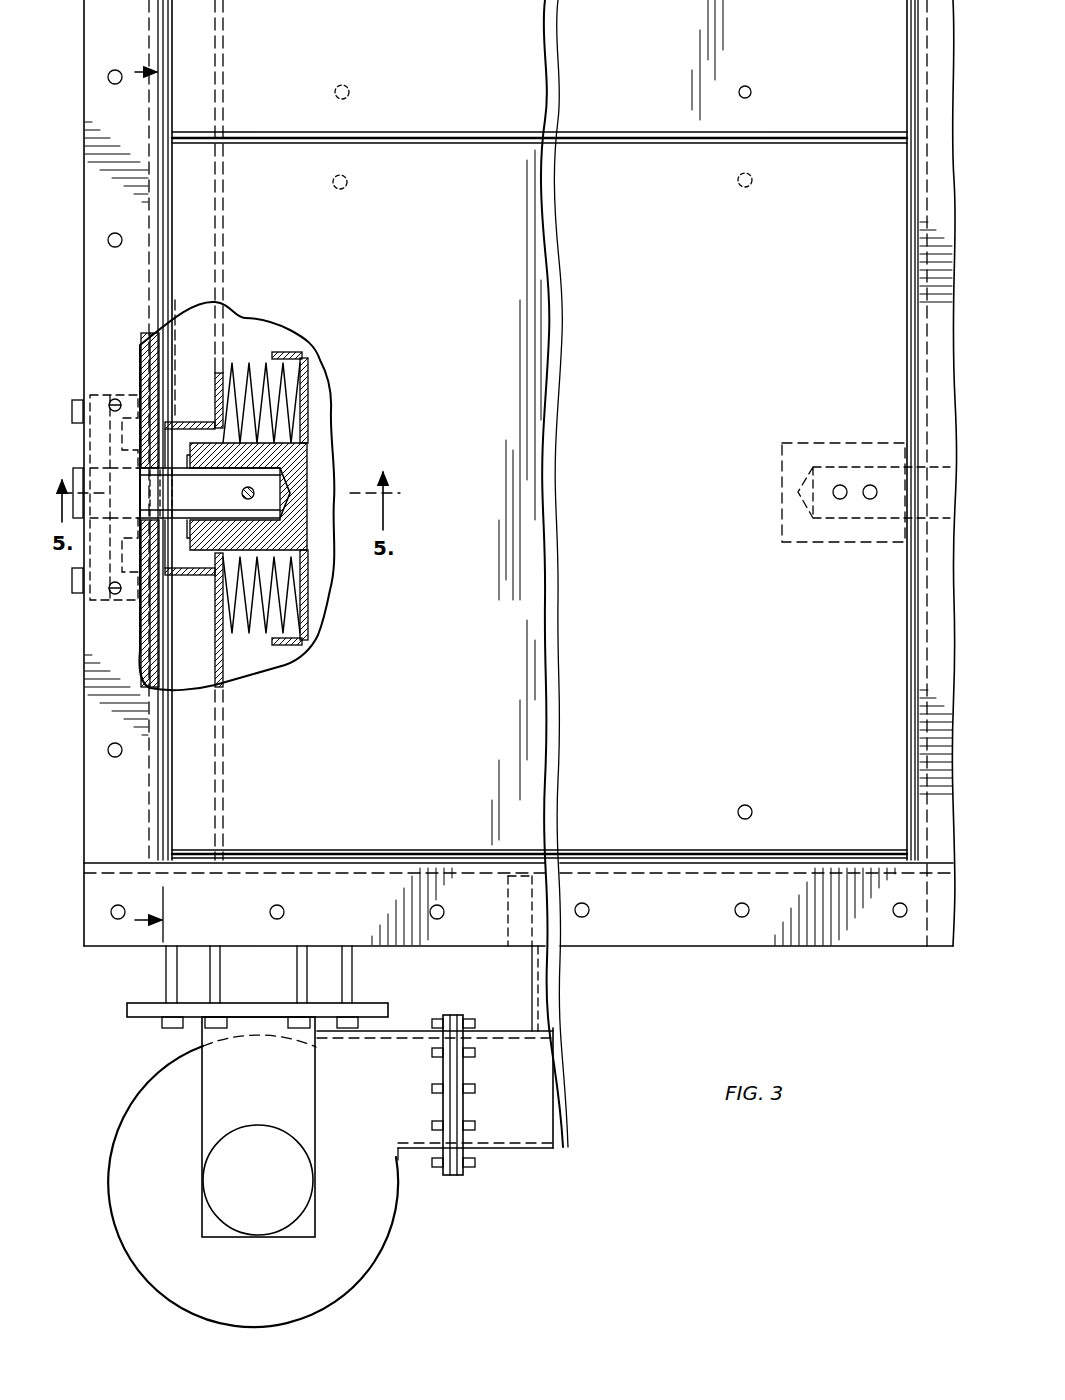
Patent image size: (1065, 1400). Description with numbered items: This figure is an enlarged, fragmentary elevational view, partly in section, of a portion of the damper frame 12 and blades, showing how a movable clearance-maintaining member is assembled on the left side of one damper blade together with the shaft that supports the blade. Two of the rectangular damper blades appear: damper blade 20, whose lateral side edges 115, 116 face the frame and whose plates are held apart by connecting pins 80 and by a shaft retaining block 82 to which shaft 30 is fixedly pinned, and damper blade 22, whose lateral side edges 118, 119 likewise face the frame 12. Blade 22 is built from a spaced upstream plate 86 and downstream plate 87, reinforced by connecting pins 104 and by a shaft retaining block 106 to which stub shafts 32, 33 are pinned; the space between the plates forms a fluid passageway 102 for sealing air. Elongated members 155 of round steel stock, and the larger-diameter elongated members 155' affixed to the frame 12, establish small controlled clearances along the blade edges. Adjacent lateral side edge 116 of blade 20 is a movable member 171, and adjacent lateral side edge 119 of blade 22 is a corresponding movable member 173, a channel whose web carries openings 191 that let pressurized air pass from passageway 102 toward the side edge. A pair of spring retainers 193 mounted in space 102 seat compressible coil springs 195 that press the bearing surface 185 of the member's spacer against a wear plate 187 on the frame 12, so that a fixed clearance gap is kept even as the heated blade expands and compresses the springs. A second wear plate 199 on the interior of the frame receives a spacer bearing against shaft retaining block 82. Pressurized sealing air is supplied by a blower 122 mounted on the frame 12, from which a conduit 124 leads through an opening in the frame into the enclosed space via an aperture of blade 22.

The frame 12 is at (470, 952).
The damper blade 20 is at (544, 13).
The damper blade 22 is at (585, 476).
The shaft 30 is at (850, 466).
The stub shaft 32 is at (846, 520).
The stub shaft 33 is at (80, 470).
The connecting pins 80 is at (341, 84).
The shaft retaining block 82 is at (796, 445).
The upstream plate 86 is at (324, 396).
The downstream plate 87 is at (367, 718).
The fluid passageway 102 is at (315, 625).
The connecting pins 104 is at (347, 180).
The shaft retaining block 106 is at (300, 462).
The lateral side edge 115 is at (905, 18).
The lateral side edge 116 is at (168, 84).
The lateral side edge 118 is at (910, 296).
The lateral side edge 119 is at (172, 240).
The blower 122 is at (375, 1238).
The conduit 124 is at (548, 1020).
The elongated members 155 is at (539, 116).
The elongated members 155' is at (539, 836).
The movable member 171 is at (220, 40).
The movable member 173 is at (199, 360).
The bearing surface 185 is at (186, 420).
The wear plate 187 is at (160, 192).
The openings 191 is at (224, 330).
The spring retainers 193 is at (308, 372).
The compressible coil springs 195 is at (288, 352).
The wear plate 199 is at (916, 88).